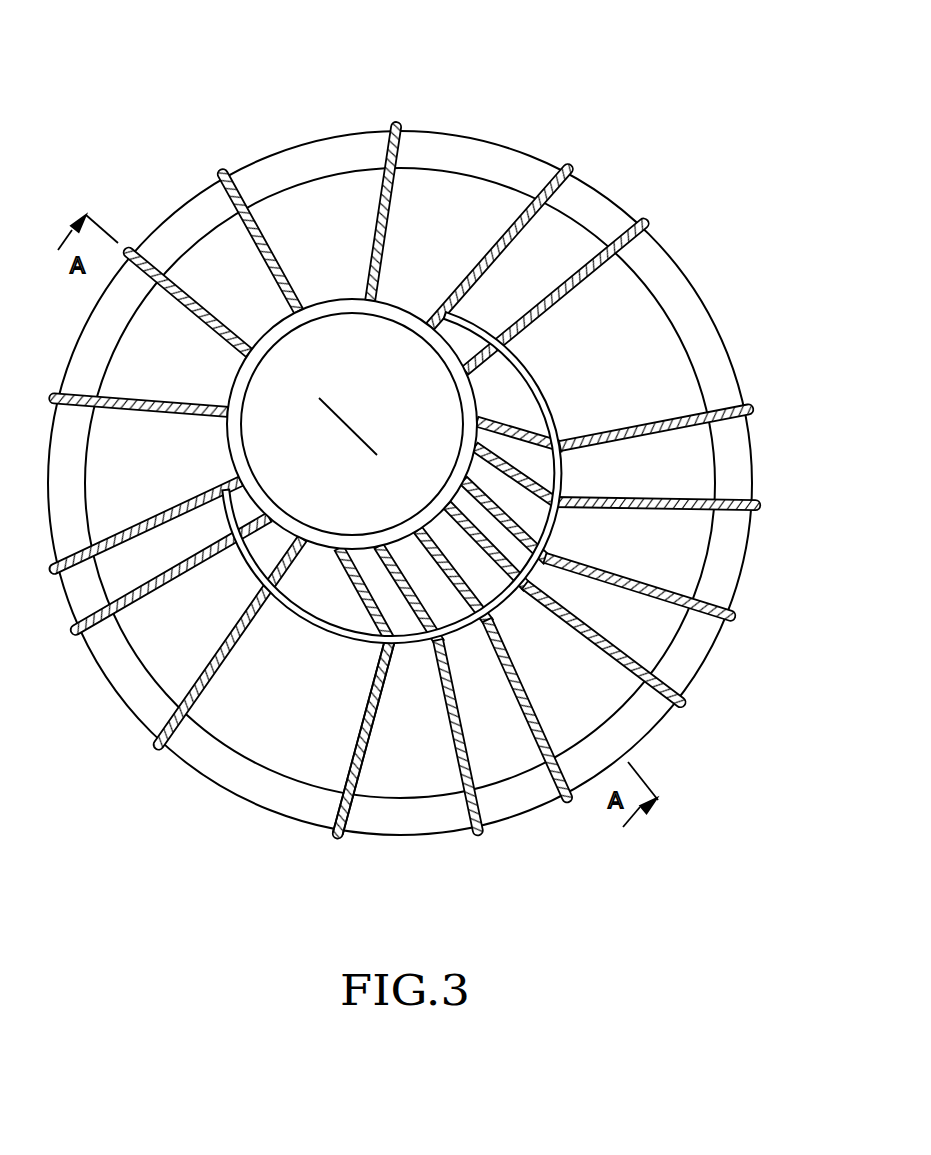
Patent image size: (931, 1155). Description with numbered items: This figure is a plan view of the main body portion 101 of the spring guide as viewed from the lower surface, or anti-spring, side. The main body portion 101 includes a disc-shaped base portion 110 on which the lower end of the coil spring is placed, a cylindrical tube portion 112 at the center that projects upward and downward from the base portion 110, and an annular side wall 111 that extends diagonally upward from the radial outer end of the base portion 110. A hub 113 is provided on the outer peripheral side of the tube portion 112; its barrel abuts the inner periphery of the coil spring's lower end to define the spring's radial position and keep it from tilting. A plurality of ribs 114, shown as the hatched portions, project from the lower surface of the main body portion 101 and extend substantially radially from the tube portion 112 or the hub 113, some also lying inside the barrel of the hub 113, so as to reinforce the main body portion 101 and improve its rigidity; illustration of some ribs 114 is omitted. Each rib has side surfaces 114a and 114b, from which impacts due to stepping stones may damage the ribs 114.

The main body portion 101 is at (178, 83).
The base portion 110 is at (610, 342).
The side wall 111 is at (307, 165).
The tube portion 112 is at (405, 318).
The hub 113 is at (560, 412).
The ribs 114 is at (341, 838).
The side surface 114a is at (352, 800).
The side surface 114b is at (358, 802).